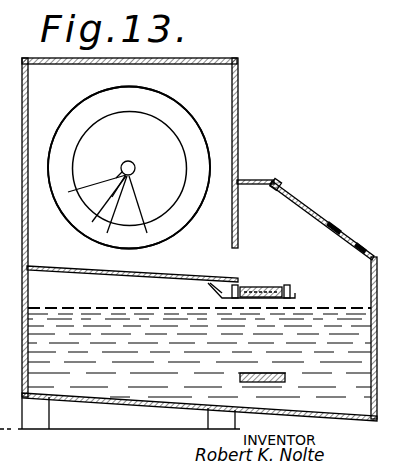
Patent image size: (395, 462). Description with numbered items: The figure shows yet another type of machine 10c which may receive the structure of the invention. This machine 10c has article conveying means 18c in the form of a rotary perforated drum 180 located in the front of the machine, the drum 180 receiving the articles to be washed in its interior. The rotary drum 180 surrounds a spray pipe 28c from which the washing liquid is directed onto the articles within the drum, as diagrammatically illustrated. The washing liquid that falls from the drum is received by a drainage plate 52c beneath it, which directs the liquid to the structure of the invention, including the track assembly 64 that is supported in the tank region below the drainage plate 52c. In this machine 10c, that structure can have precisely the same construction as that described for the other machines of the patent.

The machine 10c is at (240, 61).
The article conveying means 18c is at (196, 112).
The rotary perforated drum 180 is at (85, 100).
The spray pipe 28c is at (133, 161).
The drainage plate 52c is at (188, 278).
The track assembly 64 is at (283, 280).